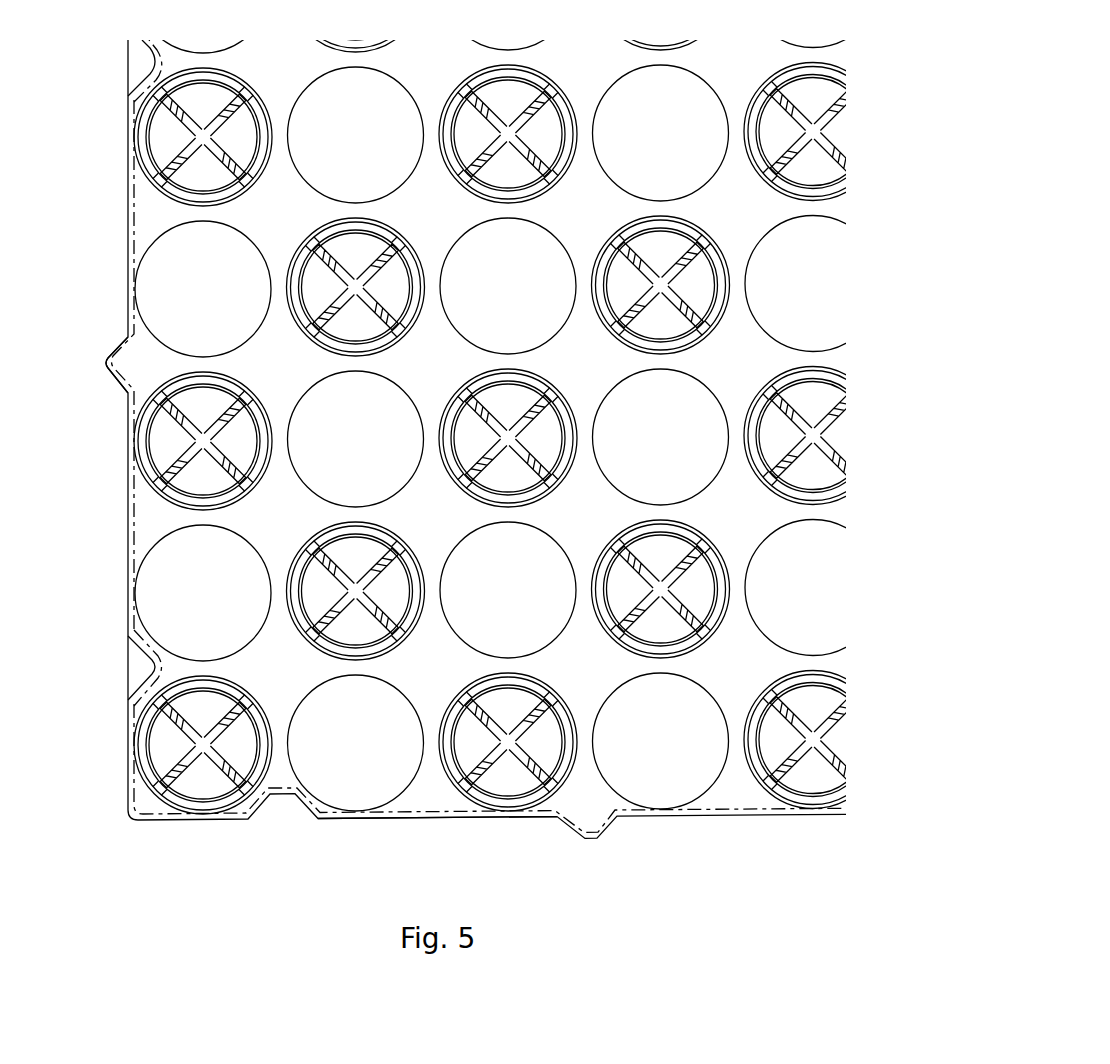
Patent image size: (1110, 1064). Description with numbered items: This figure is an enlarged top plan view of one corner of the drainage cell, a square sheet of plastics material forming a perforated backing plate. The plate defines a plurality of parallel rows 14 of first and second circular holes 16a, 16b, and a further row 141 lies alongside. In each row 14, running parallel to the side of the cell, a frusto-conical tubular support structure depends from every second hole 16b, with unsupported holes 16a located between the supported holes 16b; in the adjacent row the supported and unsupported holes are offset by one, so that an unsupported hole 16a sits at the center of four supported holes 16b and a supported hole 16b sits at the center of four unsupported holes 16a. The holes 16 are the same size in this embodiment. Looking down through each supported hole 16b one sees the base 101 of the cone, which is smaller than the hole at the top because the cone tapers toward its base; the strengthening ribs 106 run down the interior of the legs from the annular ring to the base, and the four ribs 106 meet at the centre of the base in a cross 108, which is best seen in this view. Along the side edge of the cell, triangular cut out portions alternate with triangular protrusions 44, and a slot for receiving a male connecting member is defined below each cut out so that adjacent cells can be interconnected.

The row 14 is at (186, 836).
The tray edge 141 is at (357, 836).
The pocket 16 is at (140, 68).
The first circular hole 16a is at (158, 300).
The second circular hole 16b is at (150, 457).
The triangular protrusion 44 is at (107, 377).
The base of the cone 101 is at (200, 777).
The strengthening rib 106 is at (488, 715).
The cross 108 is at (218, 768).